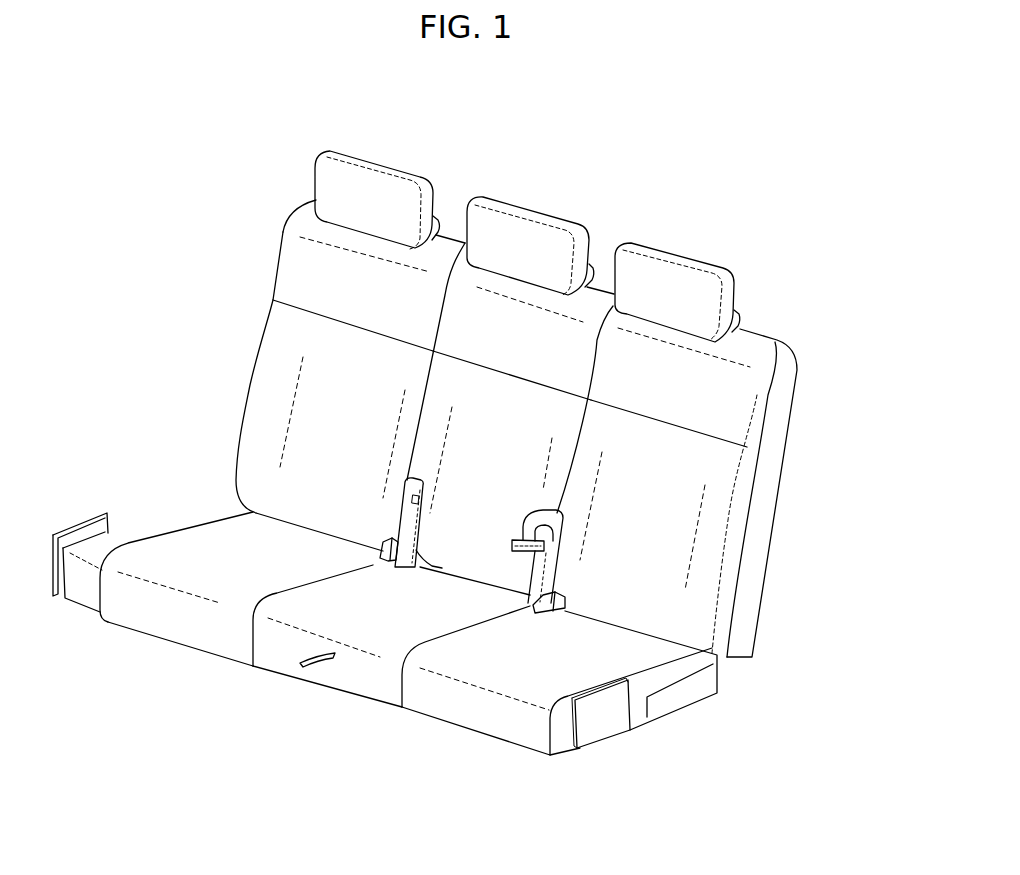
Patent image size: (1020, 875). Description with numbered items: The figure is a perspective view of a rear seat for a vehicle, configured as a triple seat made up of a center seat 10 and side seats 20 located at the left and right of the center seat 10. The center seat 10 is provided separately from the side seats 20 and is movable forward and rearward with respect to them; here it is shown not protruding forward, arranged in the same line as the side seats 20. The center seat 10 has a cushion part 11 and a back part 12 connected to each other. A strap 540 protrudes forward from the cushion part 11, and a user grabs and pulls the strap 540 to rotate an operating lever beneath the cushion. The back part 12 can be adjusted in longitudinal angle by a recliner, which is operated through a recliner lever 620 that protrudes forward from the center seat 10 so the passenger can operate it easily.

The center seat 10 is at (270, 676).
The cushion part 11 is at (363, 680).
The back part 12 is at (488, 412).
The side seats 20 is at (160, 647).
The strap 540 is at (317, 669).
The recliner lever 620 is at (563, 512).